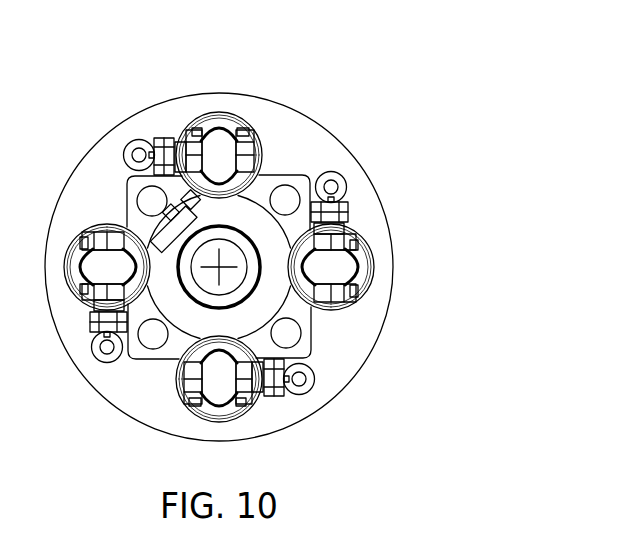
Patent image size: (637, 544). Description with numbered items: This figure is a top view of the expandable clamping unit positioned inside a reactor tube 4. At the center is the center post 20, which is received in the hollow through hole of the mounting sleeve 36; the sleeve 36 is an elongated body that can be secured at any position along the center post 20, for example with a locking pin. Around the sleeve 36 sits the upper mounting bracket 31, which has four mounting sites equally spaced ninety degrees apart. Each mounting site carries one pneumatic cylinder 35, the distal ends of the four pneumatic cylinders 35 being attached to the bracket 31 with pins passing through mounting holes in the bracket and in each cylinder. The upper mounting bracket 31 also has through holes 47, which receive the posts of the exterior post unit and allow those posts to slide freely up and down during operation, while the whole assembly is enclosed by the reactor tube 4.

The reactor tube 4 is at (58, 205).
The center post 20 is at (228, 245).
The upper mounting bracket 31 is at (166, 361).
The pneumatic cylinder 35 is at (220, 113).
The mounting sleeve 36 is at (252, 266).
The through hole 47 is at (301, 334).